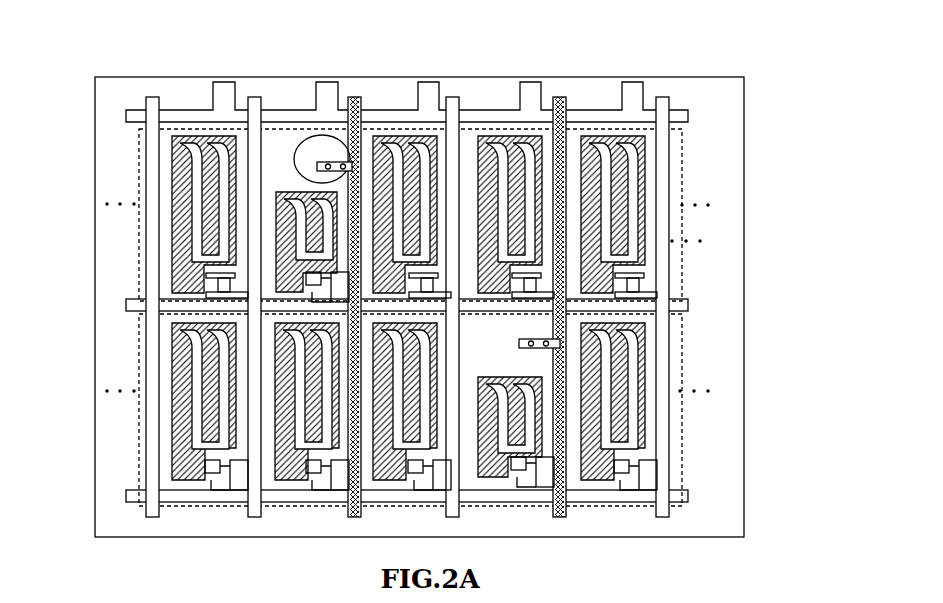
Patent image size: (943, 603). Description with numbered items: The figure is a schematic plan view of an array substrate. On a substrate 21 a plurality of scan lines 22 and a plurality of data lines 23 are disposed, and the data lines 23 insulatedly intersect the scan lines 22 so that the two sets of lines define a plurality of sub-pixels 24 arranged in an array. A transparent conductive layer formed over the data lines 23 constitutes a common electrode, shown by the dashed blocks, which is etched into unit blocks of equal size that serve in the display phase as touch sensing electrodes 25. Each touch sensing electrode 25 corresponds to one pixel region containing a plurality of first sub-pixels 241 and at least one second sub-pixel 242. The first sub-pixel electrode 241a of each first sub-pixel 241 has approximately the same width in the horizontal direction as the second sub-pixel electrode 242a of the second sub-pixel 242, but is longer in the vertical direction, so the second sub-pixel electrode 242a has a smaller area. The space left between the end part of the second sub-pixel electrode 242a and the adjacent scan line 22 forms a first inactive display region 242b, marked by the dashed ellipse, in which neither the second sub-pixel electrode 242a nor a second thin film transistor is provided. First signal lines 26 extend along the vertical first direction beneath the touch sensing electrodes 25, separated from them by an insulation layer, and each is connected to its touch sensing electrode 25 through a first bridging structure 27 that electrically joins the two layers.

The substrate 21 is at (110, 118).
The scan line 22 is at (187, 110).
The data line 23 is at (660, 169).
The sub-pixel 24 is at (637, 153).
The first sub-pixel 241 is at (689, 171).
The first sub-pixel electrode 241a is at (622, 152).
The second sub-pixel 242 is at (524, 170).
The second sub-pixel electrode 242a is at (320, 227).
The first inactive display region 242b is at (290, 146).
The touch sensing electrode 25 is at (682, 257).
The first signal line 26 is at (352, 97).
The first bridging structure 27 is at (318, 167).